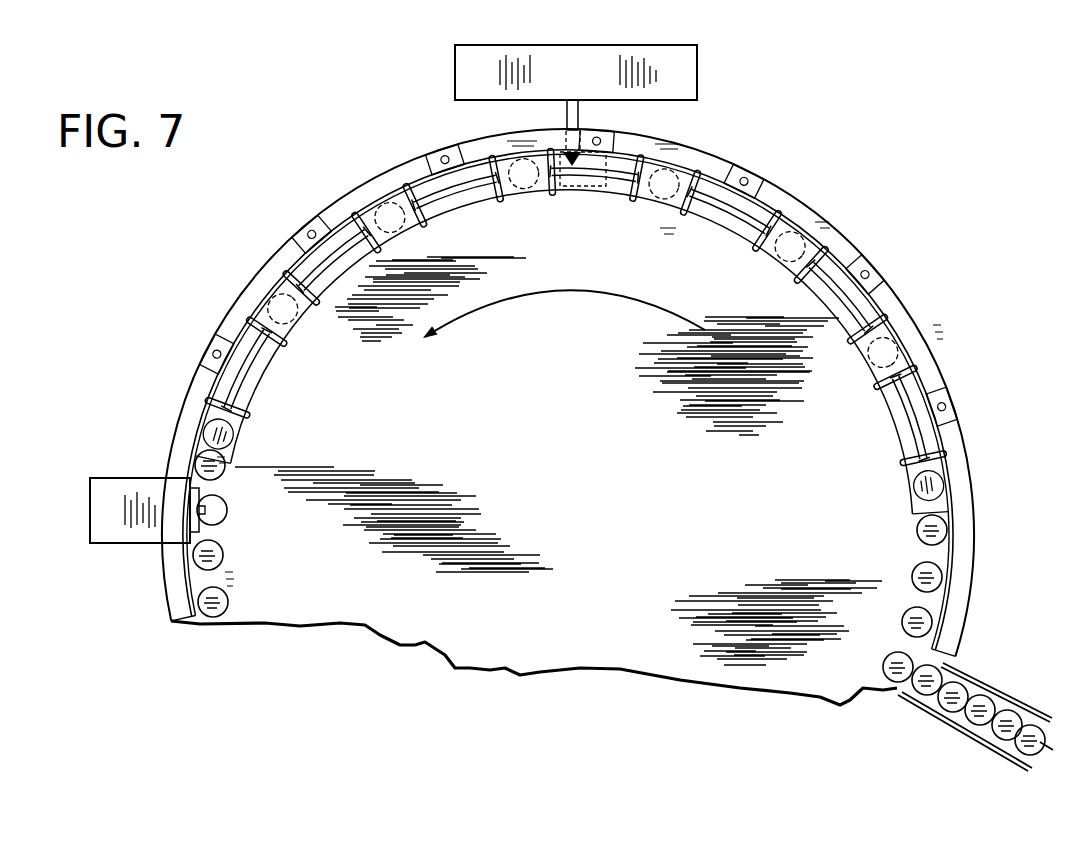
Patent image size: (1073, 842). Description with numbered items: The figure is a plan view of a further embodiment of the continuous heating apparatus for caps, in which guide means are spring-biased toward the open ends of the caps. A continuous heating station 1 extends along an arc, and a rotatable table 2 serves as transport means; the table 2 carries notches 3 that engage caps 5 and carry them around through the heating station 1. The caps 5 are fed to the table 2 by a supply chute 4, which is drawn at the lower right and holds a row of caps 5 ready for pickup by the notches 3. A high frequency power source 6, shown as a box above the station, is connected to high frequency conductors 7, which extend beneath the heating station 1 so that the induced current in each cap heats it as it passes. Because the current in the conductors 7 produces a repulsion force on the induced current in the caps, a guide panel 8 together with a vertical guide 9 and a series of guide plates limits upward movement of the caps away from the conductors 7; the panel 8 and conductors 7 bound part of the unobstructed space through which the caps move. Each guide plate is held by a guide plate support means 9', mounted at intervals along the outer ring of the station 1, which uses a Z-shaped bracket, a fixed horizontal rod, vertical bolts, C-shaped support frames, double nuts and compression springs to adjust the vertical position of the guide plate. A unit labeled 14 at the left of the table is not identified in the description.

The continuous heating station 1 is at (945, 290).
The rotatable table 2 is at (483, 648).
The notches 3 is at (910, 621).
The supply chute 4 is at (968, 730).
The caps 5 is at (224, 588).
The high frequency power source 6 is at (673, 80).
The high frequency conductors 7 is at (613, 117).
The guide panel 8 is at (377, 198).
The vertical guide 9 is at (569, 331).
The guide plate support means 9' is at (578, 277).
The feed unit 14 is at (135, 534).